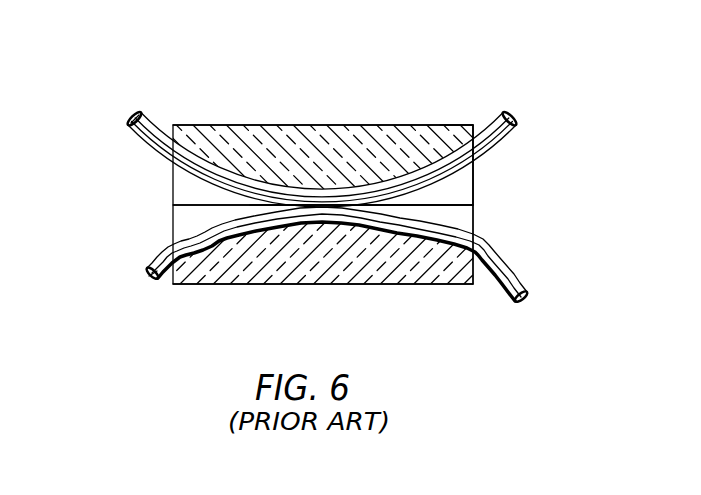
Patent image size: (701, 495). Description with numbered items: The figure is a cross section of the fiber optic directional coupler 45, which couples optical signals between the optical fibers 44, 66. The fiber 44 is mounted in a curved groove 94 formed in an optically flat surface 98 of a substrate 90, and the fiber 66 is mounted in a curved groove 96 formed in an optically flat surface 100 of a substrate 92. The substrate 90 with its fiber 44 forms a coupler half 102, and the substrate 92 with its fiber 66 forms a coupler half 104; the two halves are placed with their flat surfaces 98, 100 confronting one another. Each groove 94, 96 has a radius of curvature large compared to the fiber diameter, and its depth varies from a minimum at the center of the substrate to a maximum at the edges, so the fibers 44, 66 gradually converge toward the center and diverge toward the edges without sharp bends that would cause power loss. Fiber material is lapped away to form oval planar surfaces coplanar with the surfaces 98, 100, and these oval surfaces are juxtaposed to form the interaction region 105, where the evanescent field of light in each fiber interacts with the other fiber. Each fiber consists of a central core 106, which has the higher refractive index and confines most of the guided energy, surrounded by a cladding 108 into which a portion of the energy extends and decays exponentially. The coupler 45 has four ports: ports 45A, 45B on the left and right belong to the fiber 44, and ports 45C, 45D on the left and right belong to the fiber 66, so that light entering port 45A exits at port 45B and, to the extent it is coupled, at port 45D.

The optical fiber 44 is at (140, 135).
The fiber optic directional coupler 45 is at (548, 202).
The port 45A is at (128, 124).
The port 45B is at (519, 122).
The port 45C is at (146, 283).
The port 45D is at (505, 306).
The optical fiber 66 is at (510, 268).
The substrate 90 is at (394, 125).
The substrate 92 is at (265, 284).
The curved groove 94 is at (477, 128).
The curved groove 96 is at (196, 236).
The optically flat surface 98 is at (456, 208).
The optically flat surface 100 is at (473, 194).
The coupler half 102 is at (285, 92).
The coupler half 104 is at (445, 312).
The interaction region 105 is at (322, 226).
The central core 106 is at (151, 114).
The cladding 108 is at (167, 122).